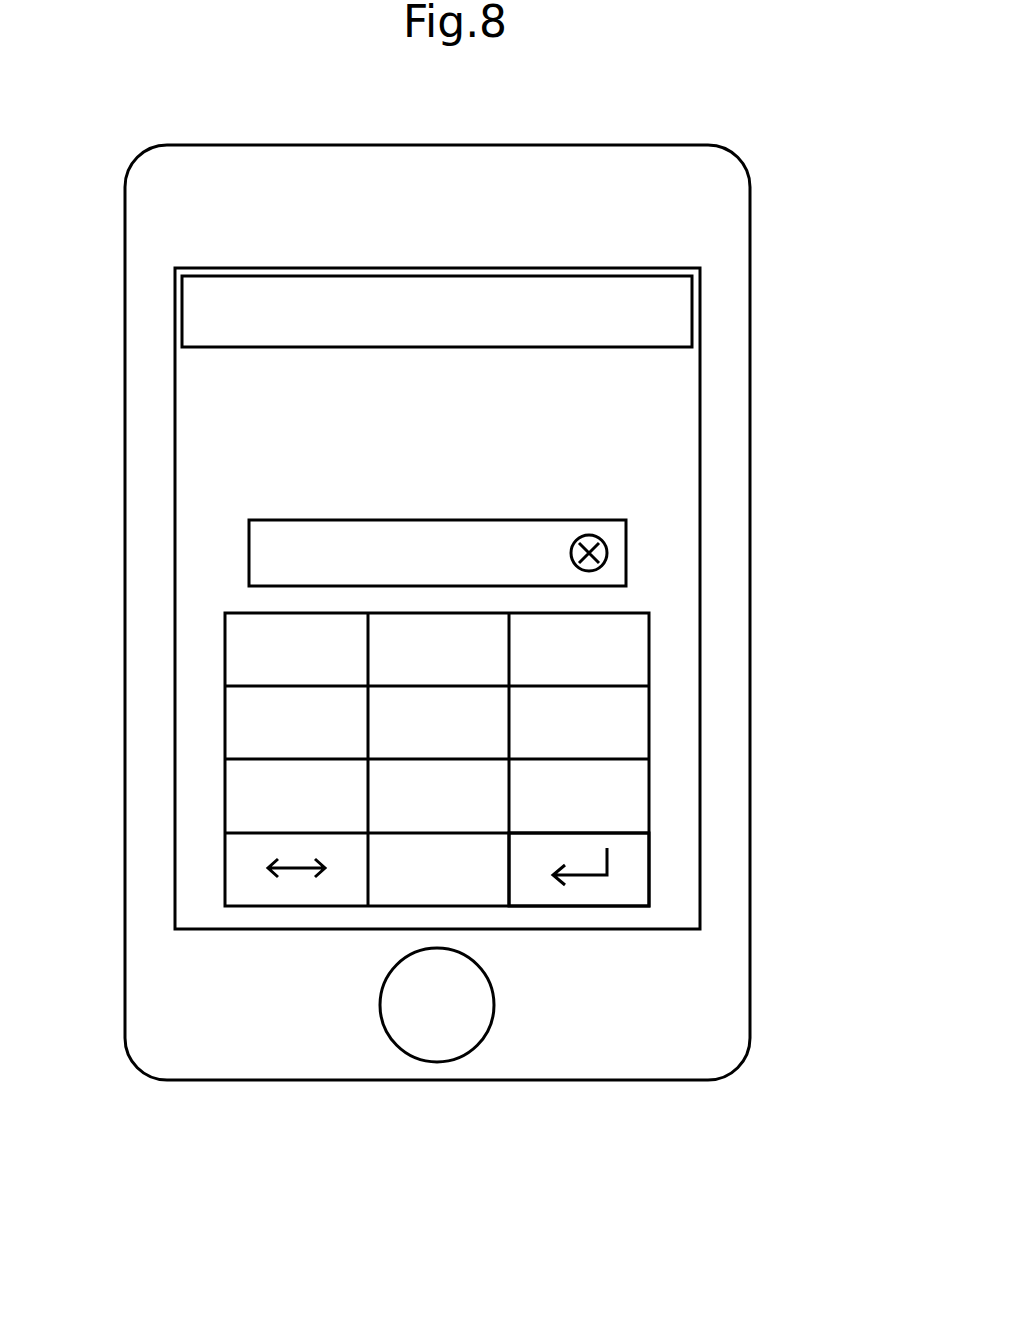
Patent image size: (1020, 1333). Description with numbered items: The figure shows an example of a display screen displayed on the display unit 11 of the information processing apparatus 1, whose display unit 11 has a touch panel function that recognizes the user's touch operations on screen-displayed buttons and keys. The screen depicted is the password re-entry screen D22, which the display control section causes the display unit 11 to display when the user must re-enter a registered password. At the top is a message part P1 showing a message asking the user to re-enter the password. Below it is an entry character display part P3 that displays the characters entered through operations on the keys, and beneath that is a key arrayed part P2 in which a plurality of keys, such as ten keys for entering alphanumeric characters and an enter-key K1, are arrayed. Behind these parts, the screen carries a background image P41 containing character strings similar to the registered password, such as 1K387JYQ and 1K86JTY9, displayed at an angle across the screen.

The information processing apparatus 1 is at (265, 1150).
The display unit 11 is at (700, 523).
The password re-entry screen D22 is at (703, 395).
The message part P1 is at (228, 348).
The key arrayed part P2 is at (223, 742).
The entry character display part P3 is at (249, 552).
The background image P41 is at (459, 759).
The enter-key K1 is at (630, 873).